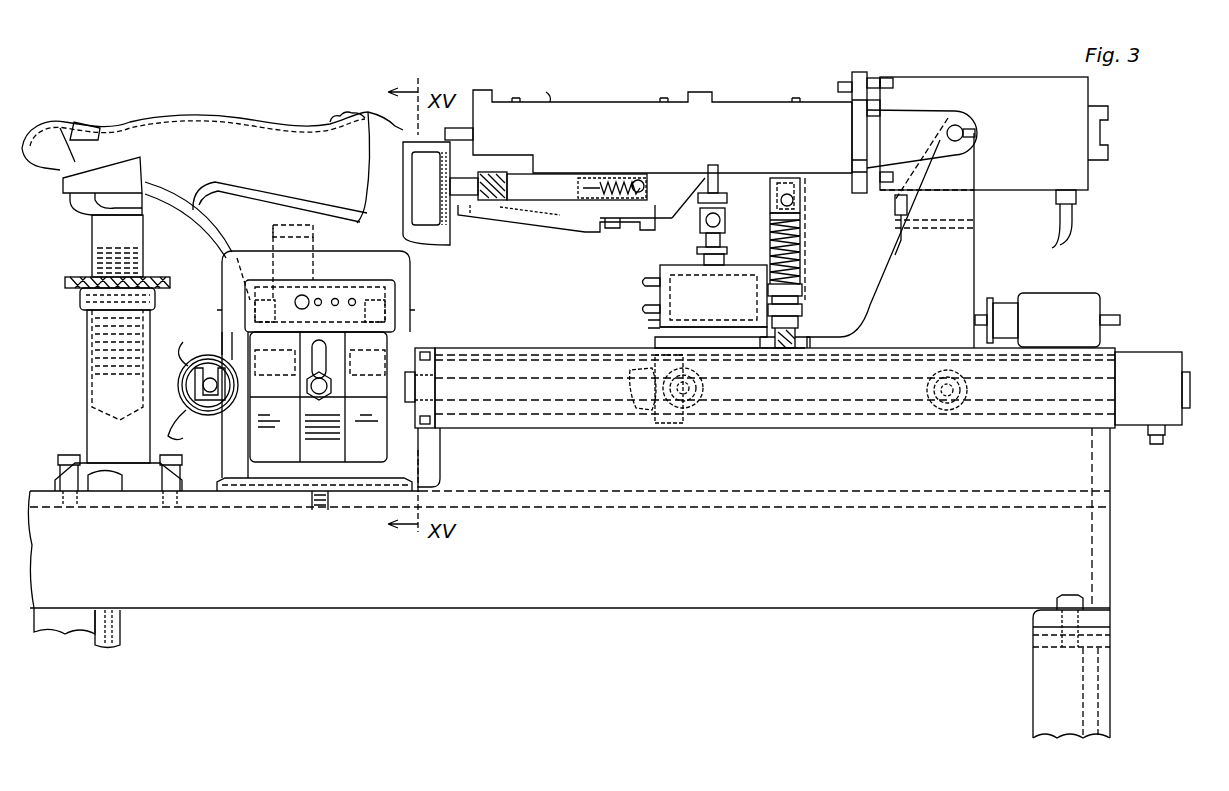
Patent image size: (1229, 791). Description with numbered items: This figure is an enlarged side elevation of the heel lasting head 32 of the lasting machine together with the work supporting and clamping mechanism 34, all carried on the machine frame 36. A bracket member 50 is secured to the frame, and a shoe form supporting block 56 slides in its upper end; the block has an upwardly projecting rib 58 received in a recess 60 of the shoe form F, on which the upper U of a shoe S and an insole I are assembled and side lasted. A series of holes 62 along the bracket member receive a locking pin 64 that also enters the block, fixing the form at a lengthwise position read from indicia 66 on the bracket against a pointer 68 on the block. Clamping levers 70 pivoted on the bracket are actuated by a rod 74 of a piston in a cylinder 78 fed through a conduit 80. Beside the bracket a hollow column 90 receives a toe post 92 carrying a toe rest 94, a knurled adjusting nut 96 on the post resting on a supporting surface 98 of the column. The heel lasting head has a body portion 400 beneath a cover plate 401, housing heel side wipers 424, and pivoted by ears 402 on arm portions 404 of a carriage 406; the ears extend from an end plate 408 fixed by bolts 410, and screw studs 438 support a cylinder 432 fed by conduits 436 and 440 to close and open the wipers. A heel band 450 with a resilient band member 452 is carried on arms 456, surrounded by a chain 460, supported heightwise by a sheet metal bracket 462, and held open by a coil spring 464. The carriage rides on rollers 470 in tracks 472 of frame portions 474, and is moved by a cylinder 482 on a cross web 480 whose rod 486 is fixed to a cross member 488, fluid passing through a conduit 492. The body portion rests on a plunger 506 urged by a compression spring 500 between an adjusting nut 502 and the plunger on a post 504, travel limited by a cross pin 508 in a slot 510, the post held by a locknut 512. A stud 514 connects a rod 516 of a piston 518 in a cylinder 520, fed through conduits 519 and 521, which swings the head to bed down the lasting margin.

The machine frame 36 is at (630, 563).
The carriage 406 is at (822, 425).
The cross member 488 is at (428, 348).
The rod 486 is at (495, 378).
The upwardly extending portions 474 is at (545, 350).
The rollers 470 is at (718, 398).
The cross web 480 is at (668, 420).
The cylinder 482 is at (645, 412).
The conduit 492 is at (1150, 444).
The tracks 472 is at (1045, 405).
The arm portions 404 is at (945, 293).
The ears 402 is at (918, 150).
The screw studs 438 is at (852, 88).
The end plate 408 is at (875, 78).
The bolts 410 is at (878, 108).
The cylinder 432 is at (990, 77).
The conduit 436 is at (1062, 246).
The conduit 440 is at (898, 226).
The body portion 400 is at (618, 148).
The heel lasting head 32 is at (562, 93).
The cover plate 401 is at (546, 102).
The heel side wipers 424 is at (465, 128).
The resilient band member 452 is at (410, 130).
The heel band 450 is at (502, 240).
The arms 456 is at (548, 195).
The coil spring 464 is at (628, 178).
The chain 460 is at (518, 220).
The sheet metal bracket 462 is at (635, 240).
The stud 514 is at (733, 226).
The rod 516 is at (700, 262).
The piston 518 is at (680, 298).
The cylinder 520 is at (660, 270).
The conduit 519 is at (650, 292).
The conduit 521 is at (650, 324).
The slot 510 is at (800, 190).
The cross pin 508 is at (794, 202).
The plunger 506 is at (798, 215).
The compression spring 500 is at (800, 244).
The post 504 is at (802, 232).
The adjusting nut 502 is at (800, 286).
The locknut 512 is at (798, 318).
The clamping levers 70 is at (410, 275).
The indicia 66 is at (395, 294).
The pointer 68 is at (315, 282).
The holes 62 is at (348, 300).
The shoe form supporting block 56 is at (320, 268).
The rib 58 is at (316, 226).
The recess 60 is at (273, 237).
The bracket member 50 is at (375, 423).
The locking pin 64 is at (300, 342).
The cylinder 78 is at (205, 360).
The rod 74 is at (212, 392).
The conduit 80 is at (168, 438).
The toe rest 94 is at (63, 185).
The toe post 92 is at (92, 238).
The knurled adjusting nut 96 is at (65, 282).
The supporting surface 98 is at (82, 292).
The hollow column 90 is at (87, 355).
The work supporting and clamping mechanism 34 is at (204, 253).
The shoe form F is at (236, 218).
The upper U is at (200, 163).
The insole I is at (80, 120).
The shoe S is at (146, 120).